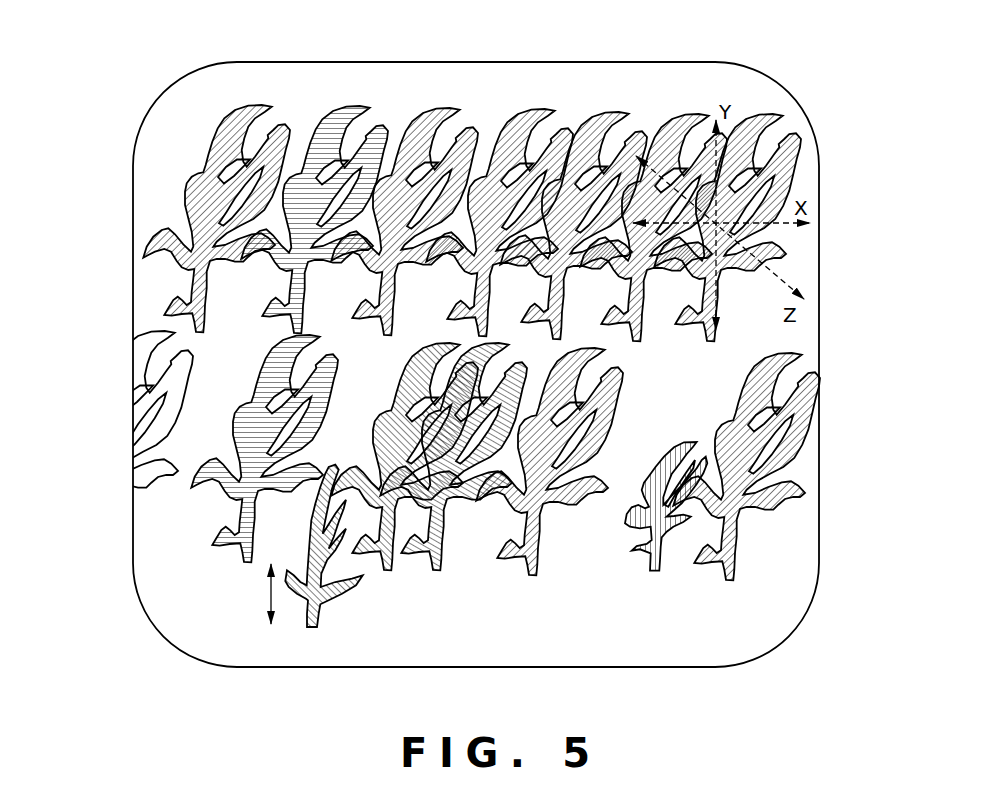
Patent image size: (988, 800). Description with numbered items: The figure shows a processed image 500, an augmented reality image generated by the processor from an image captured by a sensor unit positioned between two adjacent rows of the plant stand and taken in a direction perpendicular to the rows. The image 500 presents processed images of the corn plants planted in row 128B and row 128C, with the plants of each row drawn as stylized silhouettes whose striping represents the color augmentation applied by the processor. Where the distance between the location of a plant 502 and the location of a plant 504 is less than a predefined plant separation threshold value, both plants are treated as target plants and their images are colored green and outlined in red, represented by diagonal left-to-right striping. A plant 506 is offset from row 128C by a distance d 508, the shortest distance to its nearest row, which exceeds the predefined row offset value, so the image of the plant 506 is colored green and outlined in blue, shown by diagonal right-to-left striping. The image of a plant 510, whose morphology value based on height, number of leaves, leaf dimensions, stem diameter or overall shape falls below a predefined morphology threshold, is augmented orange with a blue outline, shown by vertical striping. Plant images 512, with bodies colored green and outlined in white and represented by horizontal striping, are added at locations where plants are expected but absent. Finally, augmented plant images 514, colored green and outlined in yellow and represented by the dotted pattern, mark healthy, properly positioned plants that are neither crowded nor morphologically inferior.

The processed image 500 is at (526, 364).
The plant 502 is at (389, 575).
The plant 504 is at (442, 520).
The plant 506 is at (311, 632).
The distance d 508 is at (228, 595).
The plant 510 is at (660, 545).
The plant images 512 is at (103, 548).
The augmented plant images 514 is at (213, 137).
The row 128B is at (777, 568).
The row 128C is at (150, 316).